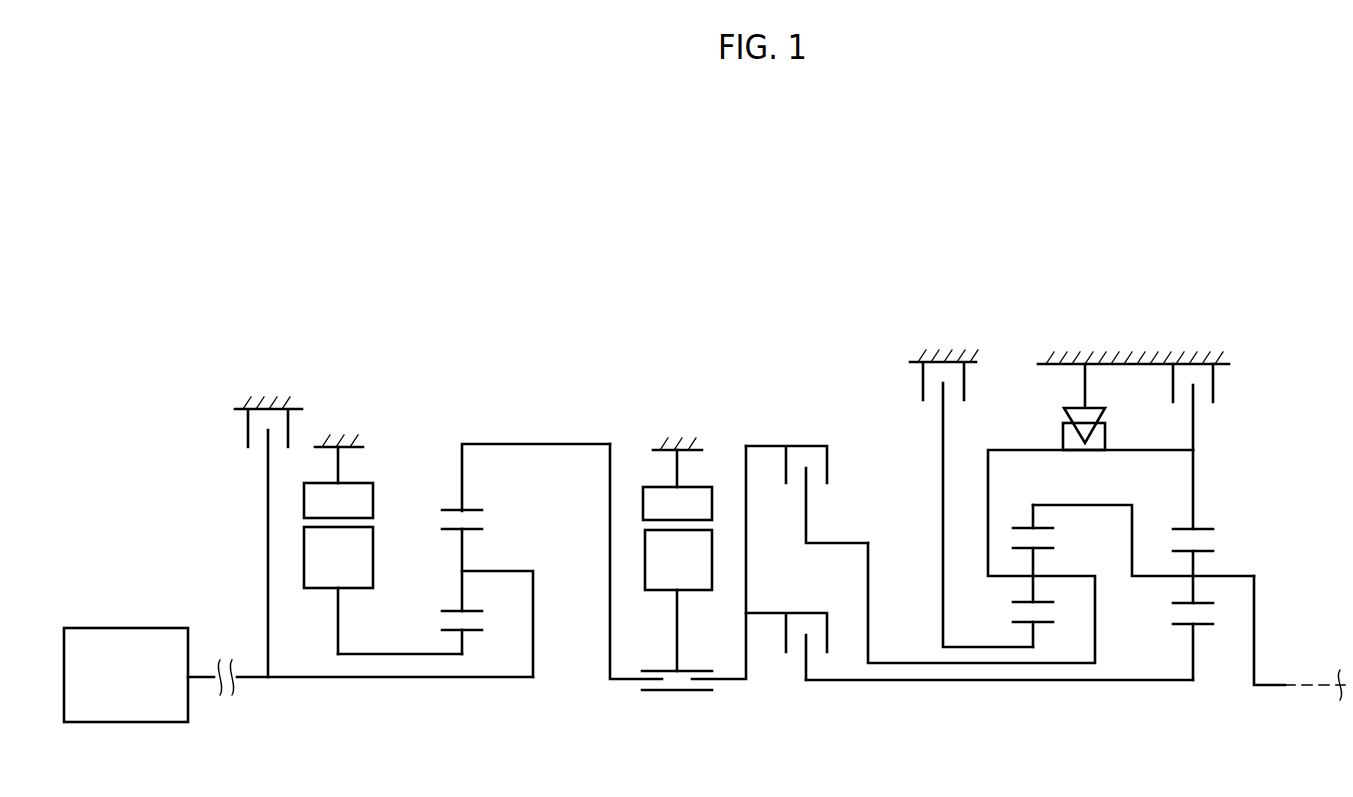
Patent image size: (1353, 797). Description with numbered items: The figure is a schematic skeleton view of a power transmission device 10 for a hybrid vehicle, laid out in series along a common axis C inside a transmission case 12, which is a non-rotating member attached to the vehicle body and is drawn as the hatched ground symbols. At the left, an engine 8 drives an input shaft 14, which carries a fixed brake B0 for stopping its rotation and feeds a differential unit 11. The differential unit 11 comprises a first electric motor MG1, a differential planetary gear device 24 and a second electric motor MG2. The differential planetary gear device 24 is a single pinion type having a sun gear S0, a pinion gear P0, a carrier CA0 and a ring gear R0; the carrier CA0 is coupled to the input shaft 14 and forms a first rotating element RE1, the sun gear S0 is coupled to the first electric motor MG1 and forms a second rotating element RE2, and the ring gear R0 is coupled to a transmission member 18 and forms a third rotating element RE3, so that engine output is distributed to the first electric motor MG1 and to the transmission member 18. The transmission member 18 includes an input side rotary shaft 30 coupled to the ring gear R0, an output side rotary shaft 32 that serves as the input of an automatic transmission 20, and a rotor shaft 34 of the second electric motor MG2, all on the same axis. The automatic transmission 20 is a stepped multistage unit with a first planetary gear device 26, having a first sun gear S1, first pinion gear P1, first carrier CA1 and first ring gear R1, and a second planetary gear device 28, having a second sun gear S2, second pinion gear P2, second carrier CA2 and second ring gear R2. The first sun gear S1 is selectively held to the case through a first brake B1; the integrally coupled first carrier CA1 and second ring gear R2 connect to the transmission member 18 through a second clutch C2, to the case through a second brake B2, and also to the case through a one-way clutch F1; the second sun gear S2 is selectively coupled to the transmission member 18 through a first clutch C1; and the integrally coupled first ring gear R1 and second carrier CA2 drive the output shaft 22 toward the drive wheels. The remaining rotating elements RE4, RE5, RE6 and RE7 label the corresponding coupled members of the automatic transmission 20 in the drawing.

The engine 8 is at (140, 628).
The power transmission device 10 is at (692, 218).
The differential unit 11 is at (400, 328).
The transmission case 12 is at (286, 405).
The input shaft 14 is at (298, 680).
The transmission member 18 is at (677, 702).
The automatic transmission 20 is at (843, 360).
The output shaft 22 is at (1268, 688).
The differential planetary gear device 24 is at (515, 619).
The first planetary gear device 26 is at (1036, 631).
The second planetary gear device 28 is at (1214, 619).
The input side rotary shaft 30 is at (620, 683).
The output side rotary shaft 32 is at (735, 683).
The rotor shaft 34 is at (697, 668).
The fixed brake B0 is at (268, 403).
The first brake B1 is at (943, 359).
The second brake B2 is at (1193, 360).
The one-way clutch F1 is at (1079, 384).
The first clutch C1 is at (786, 631).
The second clutch C2 is at (807, 478).
The first electric motor MG1 is at (338, 550).
The second electric motor MG2 is at (677, 520).
The ring gear R0 is at (475, 508).
The pinion gear P0 is at (480, 613).
The sun gear S0 is at (472, 632).
The carrier CA0 is at (512, 571).
The first ring gear R1 is at (1022, 525).
The first pinion gear P1 is at (1040, 605).
The first sun gear S1 is at (1020, 624).
The first carrier CA1 is at (1078, 575).
The second ring gear R2 is at (1205, 527).
The second pinion gear P2 is at (1173, 603).
The second sun gear S2 is at (1177, 626).
The second carrier CA2 is at (1232, 575).
The first rotating element RE1 is at (548, 649).
The second rotating element RE2 is at (398, 650).
The third rotating element RE3 is at (456, 476).
The fourth rotating element RE4 is at (915, 683).
The fifth rotating element RE5 is at (1085, 503).
The sixth rotating element RE6 is at (1041, 448).
The seventh rotating element RE7 is at (940, 565).
The axis C is at (1308, 685).